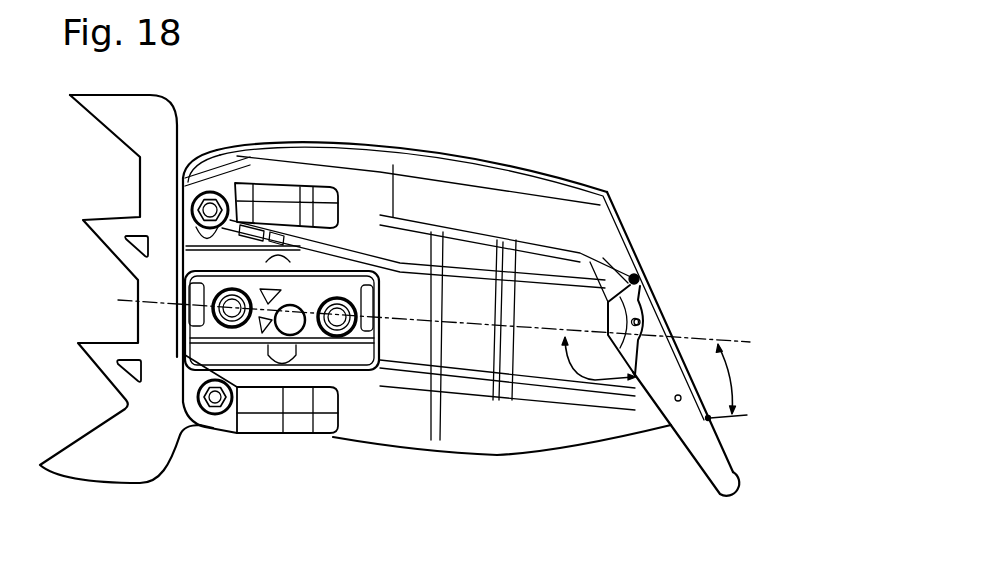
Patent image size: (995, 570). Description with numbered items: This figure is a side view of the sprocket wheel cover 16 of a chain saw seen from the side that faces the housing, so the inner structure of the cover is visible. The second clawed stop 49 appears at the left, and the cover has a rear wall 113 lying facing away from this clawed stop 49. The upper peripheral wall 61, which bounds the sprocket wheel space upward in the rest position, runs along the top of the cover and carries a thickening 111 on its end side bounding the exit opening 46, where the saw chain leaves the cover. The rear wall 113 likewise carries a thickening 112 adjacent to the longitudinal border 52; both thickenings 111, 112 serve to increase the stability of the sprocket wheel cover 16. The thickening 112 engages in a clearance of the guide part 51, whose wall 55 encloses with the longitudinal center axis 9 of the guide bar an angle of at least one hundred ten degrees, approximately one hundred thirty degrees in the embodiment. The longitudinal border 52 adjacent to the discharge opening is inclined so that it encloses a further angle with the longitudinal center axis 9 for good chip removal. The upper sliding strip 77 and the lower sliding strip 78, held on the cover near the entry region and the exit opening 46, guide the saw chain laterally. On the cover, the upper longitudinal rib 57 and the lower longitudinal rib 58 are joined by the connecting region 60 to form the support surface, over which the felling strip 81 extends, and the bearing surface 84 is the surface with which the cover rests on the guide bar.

The longitudinal center axis 9 is at (697, 338).
The sprocket wheel cover 16 is at (617, 177).
The exit opening 46 is at (210, 150).
The second clawed stop 49 is at (147, 452).
The guide part 51 is at (652, 317).
The longitudinal border 52 is at (537, 448).
The wall 55 is at (682, 440).
The upper longitudinal rib 57 is at (432, 245).
The lower longitudinal rib 58 is at (427, 370).
The connecting region 60 is at (475, 353).
The upper peripheral wall 61 is at (487, 163).
The upper sliding strip 77 is at (283, 413).
The lower sliding strip 78 is at (292, 208).
The felling strip 81 is at (505, 285).
The bearing surface 84 is at (330, 290).
The thickening 111 is at (237, 150).
The thickening 112 is at (713, 422).
The rear wall 113 is at (623, 227).